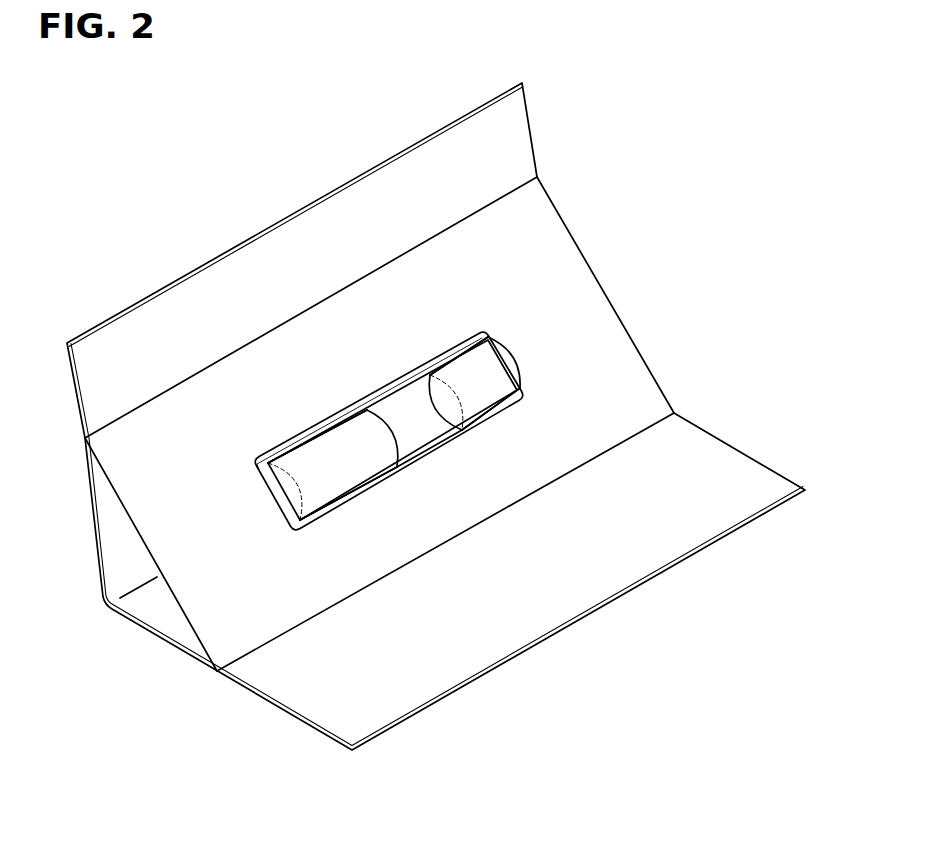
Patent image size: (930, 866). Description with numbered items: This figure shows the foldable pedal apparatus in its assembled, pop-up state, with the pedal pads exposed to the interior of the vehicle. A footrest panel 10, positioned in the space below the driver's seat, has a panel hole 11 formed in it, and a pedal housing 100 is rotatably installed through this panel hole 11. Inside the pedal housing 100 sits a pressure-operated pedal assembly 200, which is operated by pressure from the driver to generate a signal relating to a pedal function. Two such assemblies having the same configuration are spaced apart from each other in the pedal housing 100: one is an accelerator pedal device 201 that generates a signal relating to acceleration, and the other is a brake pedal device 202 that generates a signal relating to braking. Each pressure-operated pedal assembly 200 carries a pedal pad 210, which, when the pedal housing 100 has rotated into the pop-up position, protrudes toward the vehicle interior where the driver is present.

The footrest panel 10 is at (237, 403).
The panel hole 11 is at (413, 452).
The pedal housing 100 is at (410, 413).
The pressure-operated pedal assembly 200 is at (447, 506).
The accelerator pedal device 201 is at (505, 363).
The brake pedal device 202 is at (302, 485).
The pedal pad 210 is at (477, 388).